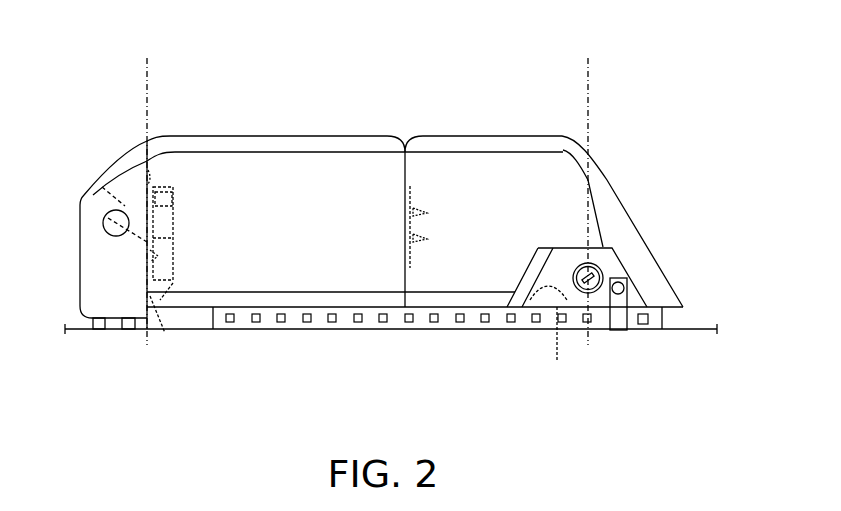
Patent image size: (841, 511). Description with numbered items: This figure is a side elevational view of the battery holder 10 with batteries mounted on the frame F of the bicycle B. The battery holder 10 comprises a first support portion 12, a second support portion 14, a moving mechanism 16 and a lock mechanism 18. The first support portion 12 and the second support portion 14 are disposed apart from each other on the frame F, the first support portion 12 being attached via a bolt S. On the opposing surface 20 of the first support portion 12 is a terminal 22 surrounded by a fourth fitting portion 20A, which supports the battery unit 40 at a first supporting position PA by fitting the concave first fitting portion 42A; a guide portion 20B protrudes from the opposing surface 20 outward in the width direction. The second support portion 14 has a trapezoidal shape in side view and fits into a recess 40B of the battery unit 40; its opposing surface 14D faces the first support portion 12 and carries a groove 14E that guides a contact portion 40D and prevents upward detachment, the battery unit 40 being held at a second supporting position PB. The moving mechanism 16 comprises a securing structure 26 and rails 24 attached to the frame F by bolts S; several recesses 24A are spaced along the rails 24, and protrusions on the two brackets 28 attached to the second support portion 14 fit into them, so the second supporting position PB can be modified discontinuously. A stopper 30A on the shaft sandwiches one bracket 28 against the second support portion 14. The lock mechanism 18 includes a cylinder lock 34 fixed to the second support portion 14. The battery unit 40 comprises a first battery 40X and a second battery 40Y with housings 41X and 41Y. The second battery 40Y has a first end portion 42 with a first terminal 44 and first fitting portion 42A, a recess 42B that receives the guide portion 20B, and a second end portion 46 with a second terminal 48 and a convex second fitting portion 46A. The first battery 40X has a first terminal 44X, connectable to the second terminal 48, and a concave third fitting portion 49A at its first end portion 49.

The battery holder 10 is at (118, 113).
The first support portion 12 is at (99, 173).
The second support portion 14 is at (580, 244).
The opposing surface 14D is at (540, 250).
The groove 14E is at (533, 330).
The moving mechanism 16 is at (472, 381).
The lock mechanism 18 is at (652, 163).
The opposing surface 20 is at (153, 140).
The fourth fitting portion 20A is at (177, 194).
The guide portion 20B is at (165, 335).
The terminal 22 is at (173, 216).
The rails 24 is at (475, 326).
The recesses 24A is at (412, 329).
The securing structure 26 is at (593, 387).
The brackets 28 is at (612, 331).
The stopper 30A is at (625, 275).
The cylinder lock 34 is at (610, 244).
The battery unit 40 is at (358, 93).
The first battery 40X is at (436, 134).
The second battery 40Y is at (370, 133).
The recess 40B is at (540, 271).
The contact portion 40D is at (559, 344).
The housing 41X is at (507, 136).
The housing 41Y is at (283, 134).
The first end portion 42 is at (150, 176).
The first fitting portion 42A is at (173, 253).
The recess 42B is at (173, 283).
The first terminal 44 is at (88, 184).
The first terminal 44X is at (427, 242).
The second end portion 46 is at (410, 170).
The second fitting portion 46A is at (400, 225).
The second terminal 48 is at (433, 216).
The first end portion 49 is at (398, 277).
The third fitting portion 49A is at (410, 264).
The first supporting position PA is at (147, 190).
The second supporting position PB is at (587, 190).
The bolt S is at (97, 330).
The bicycle B is at (695, 273).
The frame F is at (694, 328).